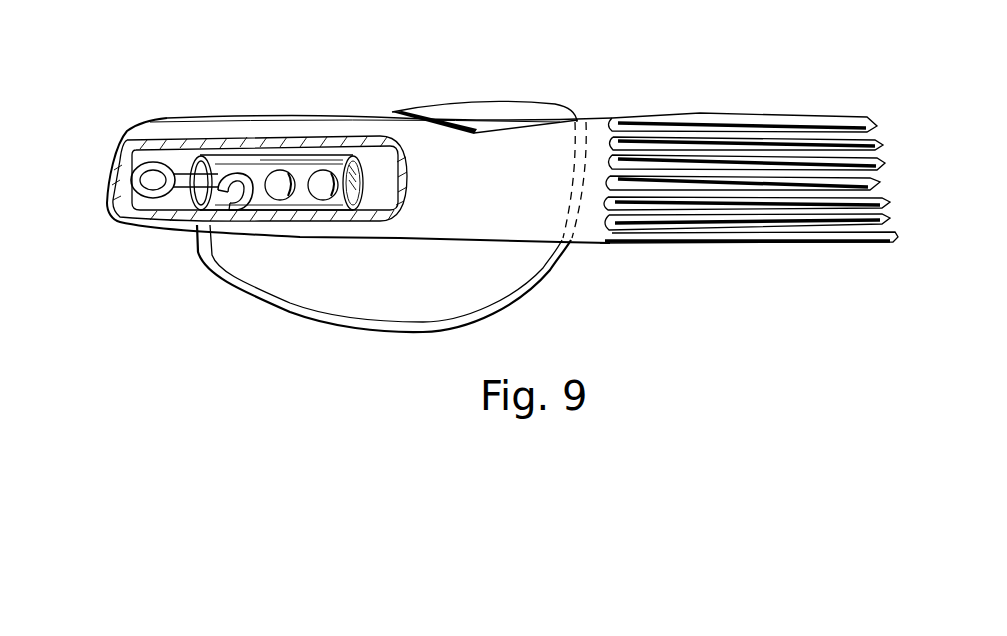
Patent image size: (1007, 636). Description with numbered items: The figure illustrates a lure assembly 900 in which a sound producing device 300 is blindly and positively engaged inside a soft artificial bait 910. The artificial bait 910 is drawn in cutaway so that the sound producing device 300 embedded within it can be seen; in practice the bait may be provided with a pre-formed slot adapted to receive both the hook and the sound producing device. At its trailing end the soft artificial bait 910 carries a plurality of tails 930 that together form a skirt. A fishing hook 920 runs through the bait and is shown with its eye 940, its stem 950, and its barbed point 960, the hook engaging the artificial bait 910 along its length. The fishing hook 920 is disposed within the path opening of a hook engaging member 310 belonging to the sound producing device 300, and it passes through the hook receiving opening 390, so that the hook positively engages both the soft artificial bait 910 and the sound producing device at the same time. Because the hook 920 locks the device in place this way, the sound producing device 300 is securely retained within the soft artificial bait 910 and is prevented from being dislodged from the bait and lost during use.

The lure assembly 900 is at (212, 61).
The artificial bait 910 is at (495, 193).
The fishing hook 920 is at (417, 352).
The tails 930 is at (775, 120).
The eye 940 is at (152, 162).
The stem 950 is at (563, 255).
The barbed point 960 is at (427, 112).
The sound producing device 300 is at (181, 208).
The hook engaging member 310 is at (231, 219).
The hook receiving opening 390 is at (256, 205).